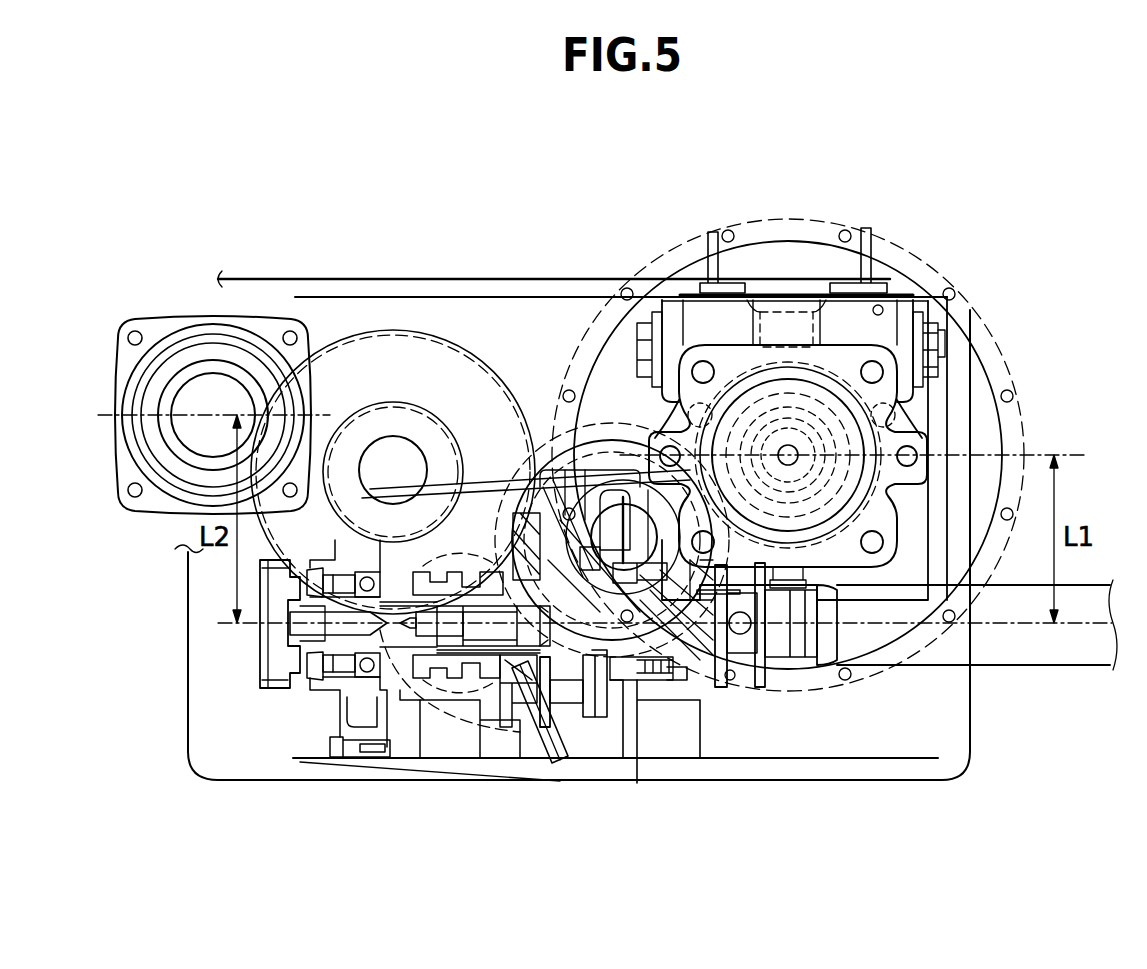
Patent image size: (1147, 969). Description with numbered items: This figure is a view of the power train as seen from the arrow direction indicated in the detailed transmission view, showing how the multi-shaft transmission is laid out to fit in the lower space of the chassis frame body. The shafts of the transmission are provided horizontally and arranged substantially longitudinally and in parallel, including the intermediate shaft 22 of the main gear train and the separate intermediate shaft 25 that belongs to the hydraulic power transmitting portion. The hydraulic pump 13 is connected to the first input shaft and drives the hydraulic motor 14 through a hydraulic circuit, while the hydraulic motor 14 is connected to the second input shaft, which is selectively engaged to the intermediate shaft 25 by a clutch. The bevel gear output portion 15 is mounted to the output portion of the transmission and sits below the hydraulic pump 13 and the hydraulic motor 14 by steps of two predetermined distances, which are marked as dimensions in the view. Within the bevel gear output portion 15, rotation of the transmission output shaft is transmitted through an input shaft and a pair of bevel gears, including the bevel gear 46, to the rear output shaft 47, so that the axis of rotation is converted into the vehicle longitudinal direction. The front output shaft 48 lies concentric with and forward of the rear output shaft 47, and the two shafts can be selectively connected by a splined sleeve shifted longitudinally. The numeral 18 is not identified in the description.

The hydraulic pump 13 is at (838, 340).
The hydraulic motor 14 is at (197, 316).
The bevel gear output portion 15 is at (553, 764).
The output shaft 18 is at (1027, 655).
The intermediate shaft 22 is at (632, 455).
The intermediate shaft 25 is at (394, 437).
The bevel gear 46 is at (570, 728).
The rear output shaft 47 is at (712, 687).
The front output shaft 48 is at (272, 690).